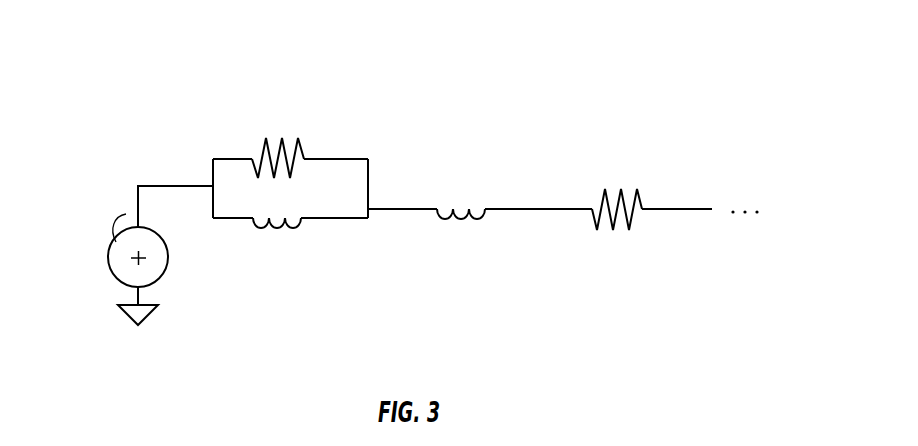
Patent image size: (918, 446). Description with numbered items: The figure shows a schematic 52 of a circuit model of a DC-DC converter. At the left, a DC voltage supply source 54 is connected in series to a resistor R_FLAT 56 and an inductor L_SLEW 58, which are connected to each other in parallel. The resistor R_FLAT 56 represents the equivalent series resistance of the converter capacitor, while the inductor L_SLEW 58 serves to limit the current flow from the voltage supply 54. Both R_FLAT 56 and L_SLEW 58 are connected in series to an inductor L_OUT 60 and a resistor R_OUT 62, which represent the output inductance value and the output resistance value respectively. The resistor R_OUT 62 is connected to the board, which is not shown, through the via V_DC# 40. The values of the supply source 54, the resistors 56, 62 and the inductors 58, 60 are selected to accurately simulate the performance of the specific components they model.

The schematic 52 is at (164, 40).
The DC voltage supply source 54 is at (104, 269).
The resistor R_FLAT 56 is at (304, 140).
The inductor L_SLEW 58 is at (299, 248).
The inductor L_OUT 60 is at (480, 220).
The resistor R_OUT 62 is at (634, 211).
The via V_DC# 40 is at (731, 190).